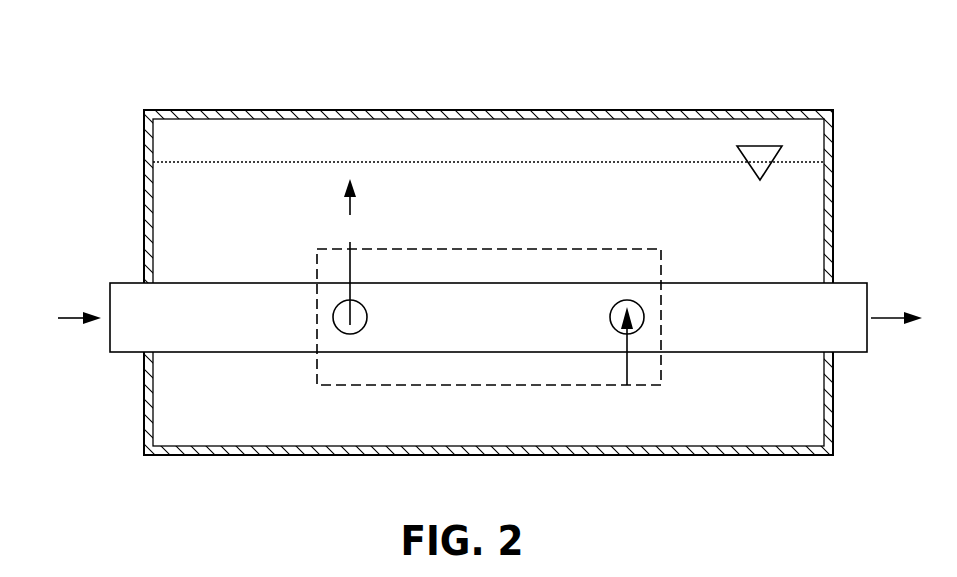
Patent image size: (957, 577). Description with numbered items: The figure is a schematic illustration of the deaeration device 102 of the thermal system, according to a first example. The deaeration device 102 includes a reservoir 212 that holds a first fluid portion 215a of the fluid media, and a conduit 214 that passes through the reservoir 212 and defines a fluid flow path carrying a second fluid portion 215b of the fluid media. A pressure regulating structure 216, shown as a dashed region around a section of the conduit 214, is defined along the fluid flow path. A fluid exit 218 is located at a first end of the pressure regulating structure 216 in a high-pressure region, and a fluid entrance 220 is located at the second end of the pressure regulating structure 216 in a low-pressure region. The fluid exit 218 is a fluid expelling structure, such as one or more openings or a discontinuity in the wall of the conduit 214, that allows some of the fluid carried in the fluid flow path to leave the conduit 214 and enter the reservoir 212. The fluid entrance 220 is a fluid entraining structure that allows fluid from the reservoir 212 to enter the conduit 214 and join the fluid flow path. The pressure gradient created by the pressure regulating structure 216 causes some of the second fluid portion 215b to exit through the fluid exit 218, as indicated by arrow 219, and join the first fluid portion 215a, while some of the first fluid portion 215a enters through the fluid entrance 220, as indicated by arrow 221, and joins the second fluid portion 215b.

The deaeration device 102 is at (190, 69).
The reservoir 212 is at (765, 111).
The conduit 214 is at (865, 283).
The first fluid portion 215a is at (488, 174).
The second fluid portion 215b is at (53, 317).
The pressure regulating structure 216 is at (612, 248).
The fluid exit 218 is at (367, 313).
The arrow 219 is at (352, 252).
The fluid entrance 220 is at (609, 318).
The arrow 221 is at (627, 422).